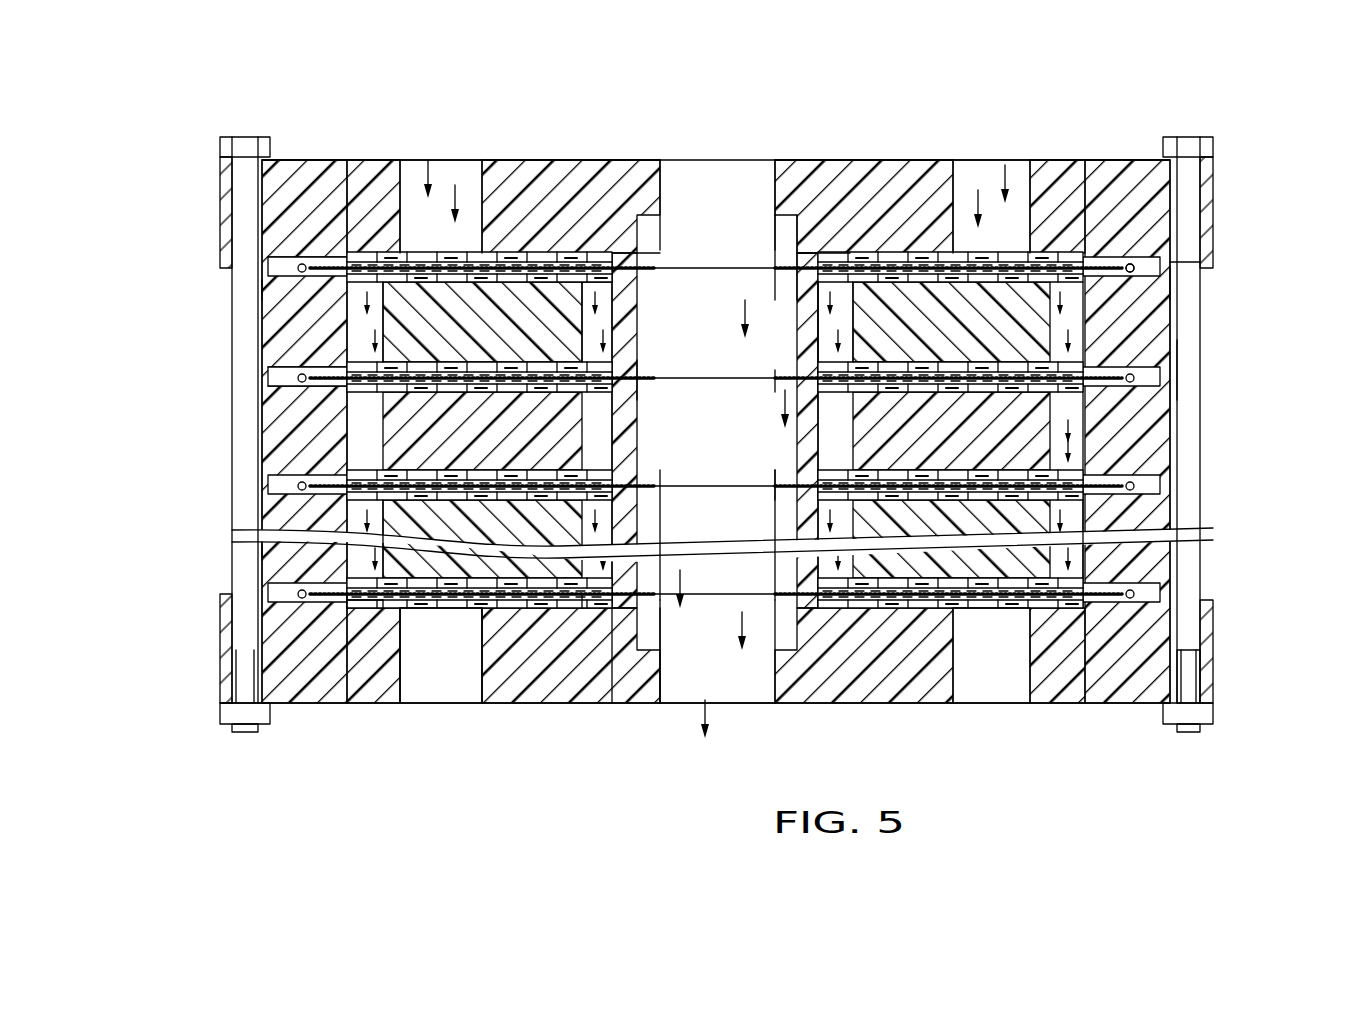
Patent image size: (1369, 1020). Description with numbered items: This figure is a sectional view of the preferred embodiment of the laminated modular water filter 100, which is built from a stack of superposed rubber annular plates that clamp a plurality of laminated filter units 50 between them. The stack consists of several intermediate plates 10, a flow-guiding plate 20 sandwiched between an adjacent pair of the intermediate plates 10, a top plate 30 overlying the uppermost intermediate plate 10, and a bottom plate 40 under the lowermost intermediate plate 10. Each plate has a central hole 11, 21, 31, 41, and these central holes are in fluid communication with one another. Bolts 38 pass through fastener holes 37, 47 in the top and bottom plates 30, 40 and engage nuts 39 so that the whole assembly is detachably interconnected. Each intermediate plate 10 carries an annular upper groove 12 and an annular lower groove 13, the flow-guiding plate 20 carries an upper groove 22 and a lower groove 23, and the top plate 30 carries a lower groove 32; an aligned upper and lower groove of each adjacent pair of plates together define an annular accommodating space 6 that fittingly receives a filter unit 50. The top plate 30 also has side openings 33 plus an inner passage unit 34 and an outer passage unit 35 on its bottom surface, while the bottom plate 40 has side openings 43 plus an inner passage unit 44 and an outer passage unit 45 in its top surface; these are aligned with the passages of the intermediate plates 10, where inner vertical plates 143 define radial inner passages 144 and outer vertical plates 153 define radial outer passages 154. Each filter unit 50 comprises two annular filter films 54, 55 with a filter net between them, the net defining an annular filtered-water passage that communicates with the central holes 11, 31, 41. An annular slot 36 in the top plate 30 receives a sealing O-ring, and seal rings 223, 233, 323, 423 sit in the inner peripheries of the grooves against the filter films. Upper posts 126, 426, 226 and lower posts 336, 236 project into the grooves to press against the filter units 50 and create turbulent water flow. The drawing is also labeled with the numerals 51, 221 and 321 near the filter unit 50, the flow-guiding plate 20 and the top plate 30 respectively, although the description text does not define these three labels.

The annular accommodating space 6 is at (298, 272).
The intermediate plate 10 is at (278, 282).
The central hole 11 is at (740, 620).
The annular upper groove 12 is at (474, 268).
The annular lower groove 13 is at (492, 355).
The flow-guiding plate 20 is at (276, 392).
The central hole 21 is at (682, 472).
The annular upper groove 22 is at (905, 250).
The annular lower groove 23 is at (1060, 460).
The top plate 30 is at (205, 190).
The central hole 31 is at (688, 192).
The annular lower groove 32 is at (922, 245).
The side opening 33 is at (420, 172).
The annular inner passage unit 34 is at (592, 300).
The annular outer passage unit 35 is at (1078, 252).
The annular slot 36 is at (1172, 262).
The fastener hole 37 is at (1213, 200).
The bolt 38 is at (1185, 372).
The nut 39 is at (1205, 735).
The bottom plate 40 is at (205, 655).
The central hole 41 is at (690, 702).
The side opening 43 is at (432, 692).
The annular inner passage unit 44 is at (592, 605).
The annular outer passage unit 45 is at (378, 622).
The fastener hole 47 is at (1210, 680).
The laminated filter unit 50 is at (300, 582).
The channel wall 51 is at (668, 650).
The annular filter film 54 is at (330, 600).
The annular filter film 55 is at (362, 602).
The laminated modular water filter 100 is at (258, 745).
The upper post 126 is at (1130, 262).
The inner vertical plate 143 is at (598, 262).
The radial inner passage 144 is at (515, 268).
The outer vertical plate 153 is at (1080, 492).
The radial outer passage 154 is at (1075, 345).
The left channel wall 221 is at (637, 385).
The seal ring 223 is at (790, 390).
The upper post 226 is at (405, 410).
The seal ring 233 is at (790, 482).
The lower post 236 is at (405, 500).
The right inner strip 321 is at (795, 265).
The seal ring 323 is at (603, 240).
The lower post 336 is at (1010, 255).
The seal ring 423 is at (635, 640).
The upper post 426 is at (408, 640).